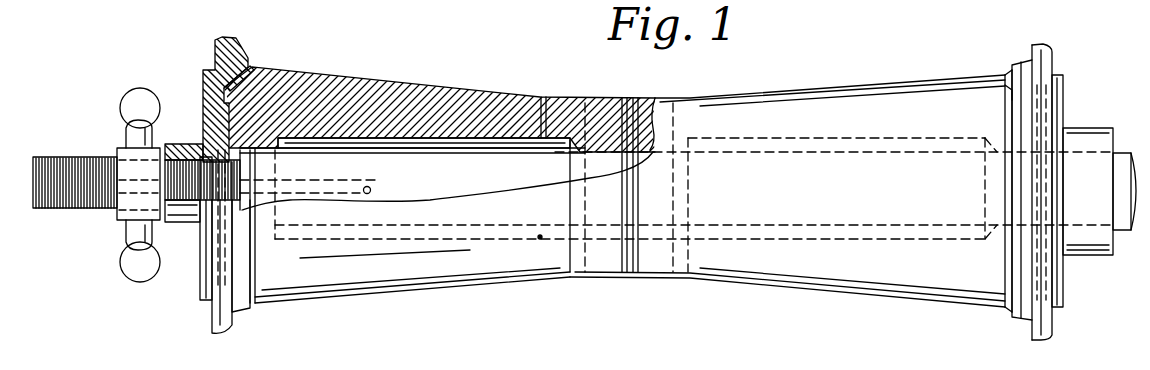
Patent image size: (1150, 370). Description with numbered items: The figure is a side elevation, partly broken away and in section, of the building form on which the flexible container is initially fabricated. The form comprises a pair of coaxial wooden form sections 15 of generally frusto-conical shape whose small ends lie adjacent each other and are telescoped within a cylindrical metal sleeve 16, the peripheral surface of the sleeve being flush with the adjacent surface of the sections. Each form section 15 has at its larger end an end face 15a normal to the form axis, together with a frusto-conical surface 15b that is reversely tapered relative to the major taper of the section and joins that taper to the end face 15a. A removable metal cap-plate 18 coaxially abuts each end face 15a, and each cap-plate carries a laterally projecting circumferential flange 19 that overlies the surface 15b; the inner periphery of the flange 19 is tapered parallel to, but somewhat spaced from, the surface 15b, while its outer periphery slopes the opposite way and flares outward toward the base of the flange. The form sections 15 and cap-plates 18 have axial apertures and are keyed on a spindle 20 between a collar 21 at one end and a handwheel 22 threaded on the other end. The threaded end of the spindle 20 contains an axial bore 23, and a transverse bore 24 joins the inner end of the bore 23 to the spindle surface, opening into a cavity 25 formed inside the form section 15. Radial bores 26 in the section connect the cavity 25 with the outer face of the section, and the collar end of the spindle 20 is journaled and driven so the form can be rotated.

The form section 15 is at (422, 86).
The end face 15a is at (262, 78).
The frusto-conical surface 15b is at (246, 74).
The cylindrical metal sleeve 16 is at (612, 98).
The cap-plate 18 is at (206, 318).
The circumferential flange 19 is at (236, 58).
The spindle 20 is at (66, 210).
The collar 21 is at (1086, 256).
The handwheel 22 is at (136, 272).
The axial bore 23 is at (130, 180).
The transverse bore 24 is at (367, 194).
The cavity 25 is at (455, 137).
The radial bore 26 is at (545, 97).